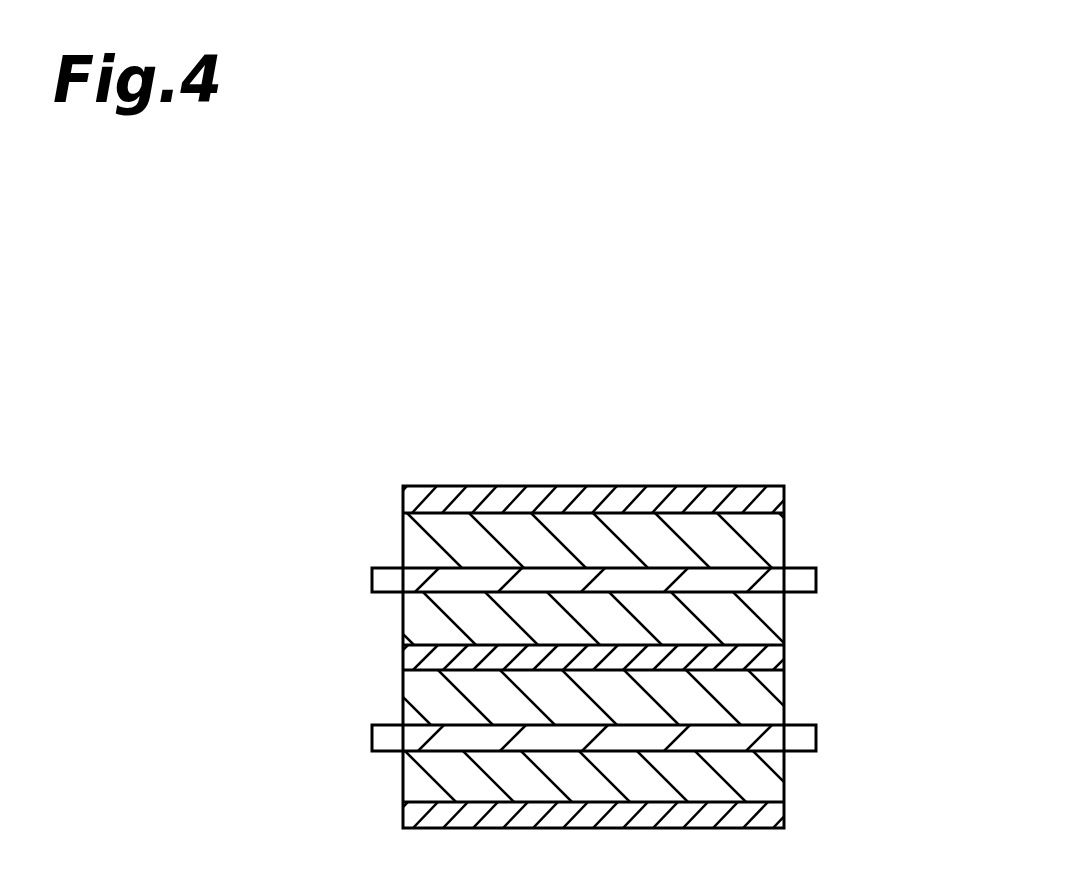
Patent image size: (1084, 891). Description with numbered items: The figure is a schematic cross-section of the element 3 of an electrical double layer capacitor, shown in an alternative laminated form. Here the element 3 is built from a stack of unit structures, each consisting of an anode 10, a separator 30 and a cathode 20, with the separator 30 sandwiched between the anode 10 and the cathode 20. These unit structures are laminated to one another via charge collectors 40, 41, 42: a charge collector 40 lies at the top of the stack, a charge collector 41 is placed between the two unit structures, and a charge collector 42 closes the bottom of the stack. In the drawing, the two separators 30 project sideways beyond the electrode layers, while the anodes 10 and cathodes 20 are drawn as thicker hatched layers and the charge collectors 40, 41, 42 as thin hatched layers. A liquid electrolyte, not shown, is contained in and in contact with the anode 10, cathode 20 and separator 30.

The element 3 is at (795, 375).
The anode 10 is at (416, 539).
The cathode 20 is at (416, 617).
The separator 30 is at (396, 584).
The charge collector 40 is at (410, 496).
The charge collector 41 is at (786, 653).
The charge collector 42 is at (772, 812).